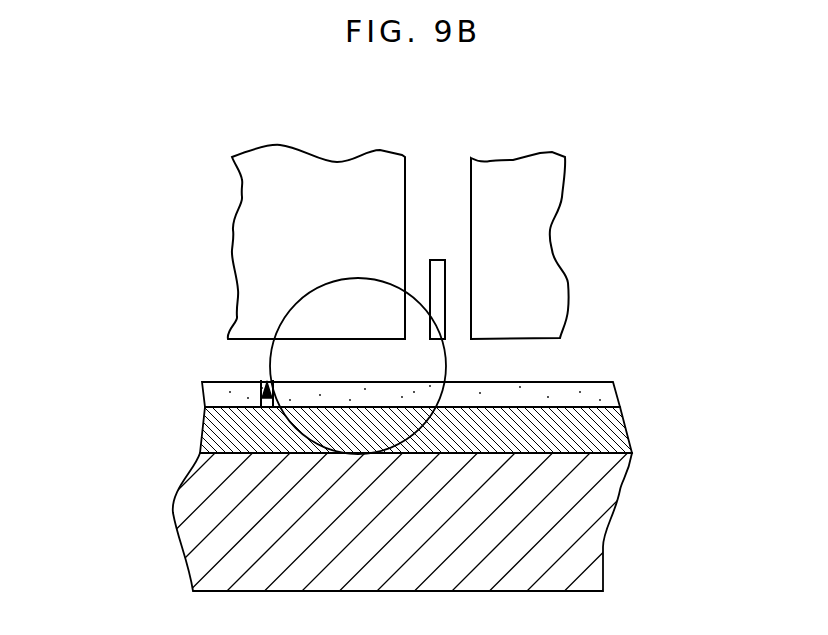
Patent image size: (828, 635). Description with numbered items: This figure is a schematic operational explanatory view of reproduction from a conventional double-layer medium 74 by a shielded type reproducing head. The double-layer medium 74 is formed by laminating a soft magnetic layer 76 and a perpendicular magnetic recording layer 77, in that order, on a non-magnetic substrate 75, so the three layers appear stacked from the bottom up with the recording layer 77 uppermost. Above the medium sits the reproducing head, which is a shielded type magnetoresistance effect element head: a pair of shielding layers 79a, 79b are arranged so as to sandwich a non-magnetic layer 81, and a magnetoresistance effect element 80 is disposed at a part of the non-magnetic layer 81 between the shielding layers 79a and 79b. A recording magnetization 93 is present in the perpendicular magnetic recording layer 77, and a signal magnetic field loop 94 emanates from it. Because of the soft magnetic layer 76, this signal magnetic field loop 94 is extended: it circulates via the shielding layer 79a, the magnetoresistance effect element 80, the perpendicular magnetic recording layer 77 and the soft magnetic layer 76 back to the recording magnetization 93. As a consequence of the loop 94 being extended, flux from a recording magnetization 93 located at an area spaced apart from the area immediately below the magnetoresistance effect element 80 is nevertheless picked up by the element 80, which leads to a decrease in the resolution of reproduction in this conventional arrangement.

The double-layer medium 74 is at (381, 485).
The non-magnetic substrate 75 is at (419, 511).
The soft magnetic layer 76 is at (218, 430).
The perpendicular magnetic recording layer 77 is at (218, 393).
The shielding layer 79a is at (268, 190).
The shielding layer 79b is at (557, 180).
The magnetoresistance effect element 80 is at (442, 293).
The non-magnetic layer 81 is at (448, 227).
The recording magnetization 93 is at (256, 382).
The signal magnetic field loop 94 is at (449, 367).